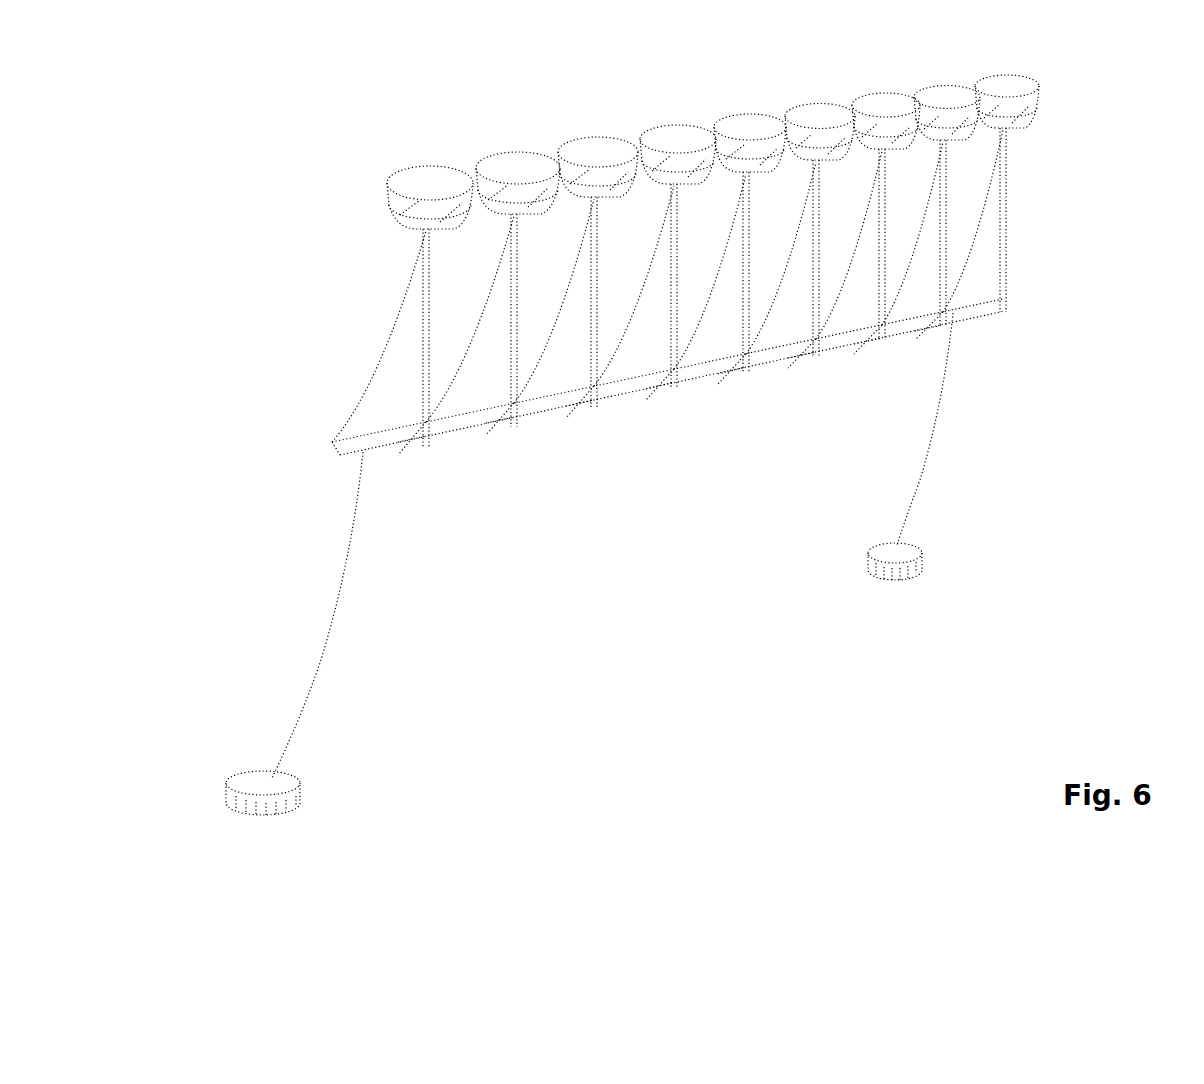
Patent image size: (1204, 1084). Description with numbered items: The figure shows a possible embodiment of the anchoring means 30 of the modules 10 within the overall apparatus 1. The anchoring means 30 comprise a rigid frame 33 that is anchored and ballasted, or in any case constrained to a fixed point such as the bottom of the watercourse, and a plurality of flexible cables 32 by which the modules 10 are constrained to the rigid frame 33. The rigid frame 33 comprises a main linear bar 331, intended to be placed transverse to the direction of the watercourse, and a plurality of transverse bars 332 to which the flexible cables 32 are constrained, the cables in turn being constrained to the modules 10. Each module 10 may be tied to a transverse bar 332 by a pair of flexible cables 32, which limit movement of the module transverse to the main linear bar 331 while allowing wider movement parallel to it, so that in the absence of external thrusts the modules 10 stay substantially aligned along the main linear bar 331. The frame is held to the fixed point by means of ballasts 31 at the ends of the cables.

The lighting device 1 is at (249, 178).
The module 10 is at (590, 153).
The anchoring means 30 is at (1003, 407).
The ballast 31 is at (267, 792).
The flexible cable 32 is at (430, 327).
The rigid frame 33 is at (760, 357).
The main linear bar 331 is at (603, 393).
The transverse bar 332 is at (486, 429).